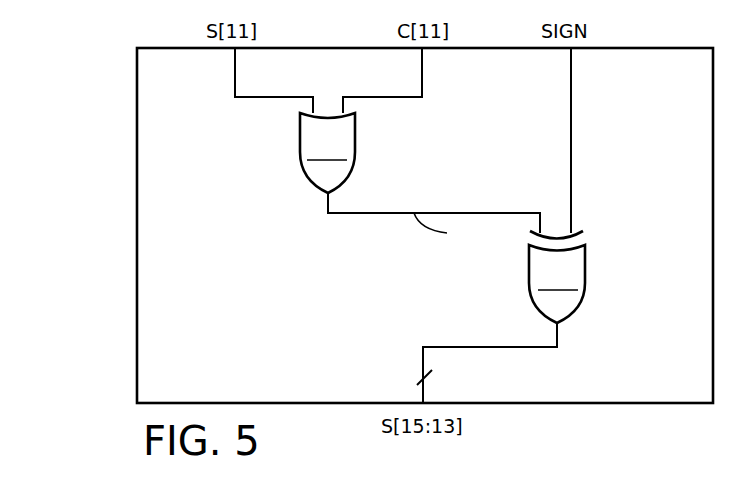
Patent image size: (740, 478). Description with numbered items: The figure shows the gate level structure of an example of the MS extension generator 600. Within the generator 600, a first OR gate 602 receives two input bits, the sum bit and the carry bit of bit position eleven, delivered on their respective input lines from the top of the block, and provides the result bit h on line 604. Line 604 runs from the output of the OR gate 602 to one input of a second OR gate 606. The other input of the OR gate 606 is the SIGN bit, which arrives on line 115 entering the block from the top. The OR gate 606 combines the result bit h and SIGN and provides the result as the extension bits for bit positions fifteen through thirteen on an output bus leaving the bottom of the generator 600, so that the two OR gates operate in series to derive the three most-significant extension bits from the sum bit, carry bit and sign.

The MS extension generator 600 is at (137, 93).
The line 115 is at (571, 75).
The OR gate 602 is at (355, 133).
The line 604 is at (450, 213).
The OR gate 606 is at (557, 277).